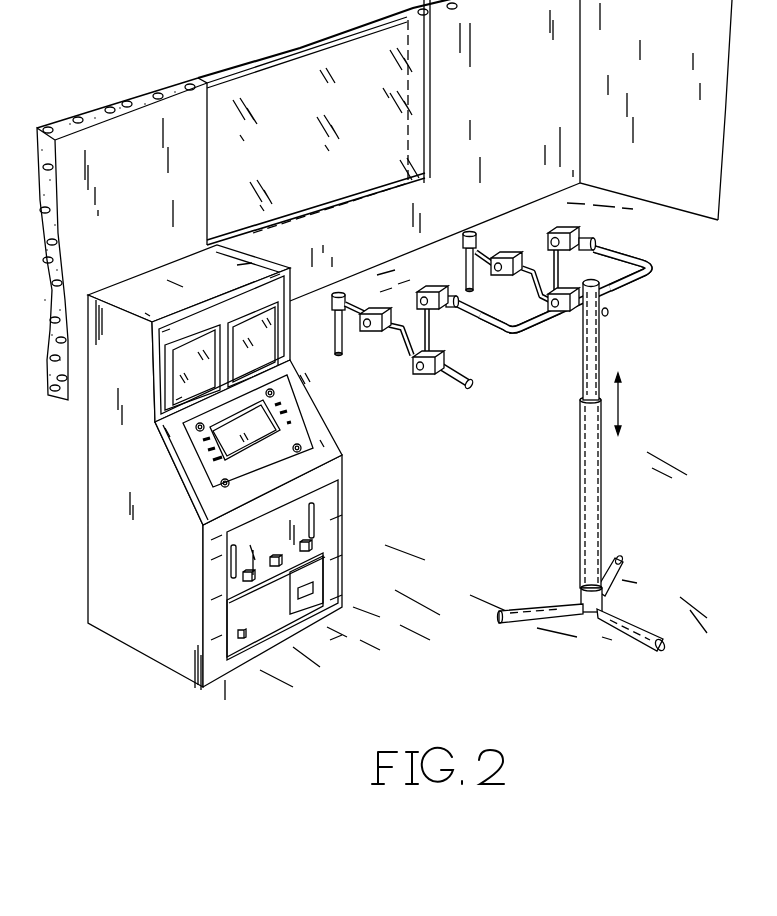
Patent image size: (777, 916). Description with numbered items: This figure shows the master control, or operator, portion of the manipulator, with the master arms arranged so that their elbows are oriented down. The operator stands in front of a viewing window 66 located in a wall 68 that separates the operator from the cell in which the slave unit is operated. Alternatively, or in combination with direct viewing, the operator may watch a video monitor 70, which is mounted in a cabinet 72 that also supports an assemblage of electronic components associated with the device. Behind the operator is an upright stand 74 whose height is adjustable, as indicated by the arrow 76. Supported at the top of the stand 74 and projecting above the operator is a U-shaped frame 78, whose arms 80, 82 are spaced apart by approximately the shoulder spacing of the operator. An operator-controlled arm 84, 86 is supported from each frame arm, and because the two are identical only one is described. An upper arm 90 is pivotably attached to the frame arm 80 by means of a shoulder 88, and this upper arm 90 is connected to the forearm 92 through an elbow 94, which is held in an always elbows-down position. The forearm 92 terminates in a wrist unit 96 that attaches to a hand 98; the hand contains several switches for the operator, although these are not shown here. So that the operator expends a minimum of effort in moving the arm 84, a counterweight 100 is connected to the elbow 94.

The viewing window 66 is at (430, 110).
The wall 68 is at (524, 104).
The video monitor 70 is at (176, 390).
The cabinet 72 is at (167, 450).
The upright stand 74 is at (587, 503).
The arrow 76 is at (618, 400).
The U-shaped frame 78 is at (542, 331).
The frame arm 80 is at (505, 322).
The frame arm 82 is at (630, 256).
The operator-controlled arm 84 is at (410, 322).
The operator-controlled arm 86 is at (545, 262).
The shoulder 88 is at (437, 309).
The upper arm 90 is at (433, 336).
The forearm 92 is at (402, 352).
The elbow 94 is at (422, 378).
The wrist unit 96 is at (372, 333).
The hand 98 is at (337, 332).
The counterweight 100 is at (463, 388).